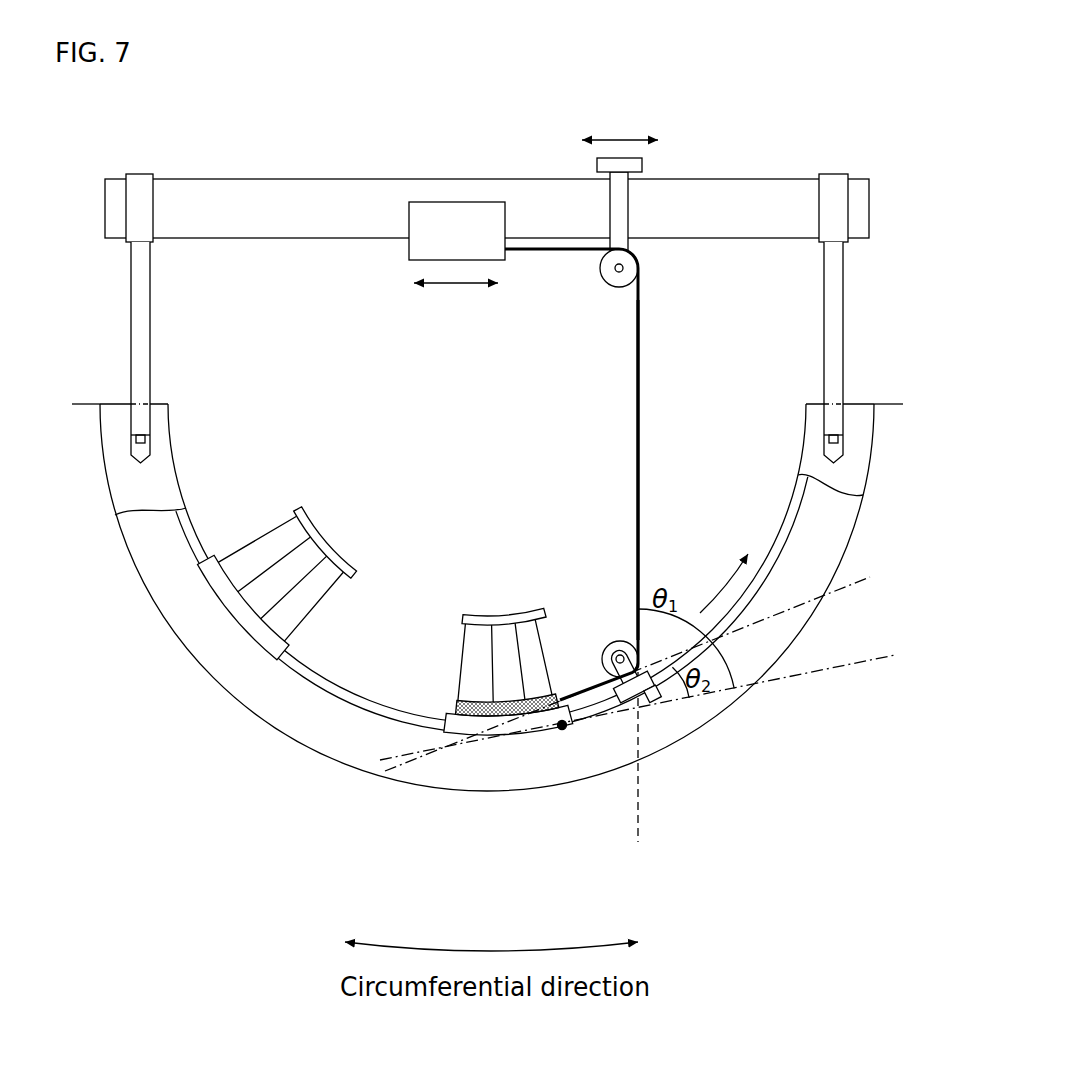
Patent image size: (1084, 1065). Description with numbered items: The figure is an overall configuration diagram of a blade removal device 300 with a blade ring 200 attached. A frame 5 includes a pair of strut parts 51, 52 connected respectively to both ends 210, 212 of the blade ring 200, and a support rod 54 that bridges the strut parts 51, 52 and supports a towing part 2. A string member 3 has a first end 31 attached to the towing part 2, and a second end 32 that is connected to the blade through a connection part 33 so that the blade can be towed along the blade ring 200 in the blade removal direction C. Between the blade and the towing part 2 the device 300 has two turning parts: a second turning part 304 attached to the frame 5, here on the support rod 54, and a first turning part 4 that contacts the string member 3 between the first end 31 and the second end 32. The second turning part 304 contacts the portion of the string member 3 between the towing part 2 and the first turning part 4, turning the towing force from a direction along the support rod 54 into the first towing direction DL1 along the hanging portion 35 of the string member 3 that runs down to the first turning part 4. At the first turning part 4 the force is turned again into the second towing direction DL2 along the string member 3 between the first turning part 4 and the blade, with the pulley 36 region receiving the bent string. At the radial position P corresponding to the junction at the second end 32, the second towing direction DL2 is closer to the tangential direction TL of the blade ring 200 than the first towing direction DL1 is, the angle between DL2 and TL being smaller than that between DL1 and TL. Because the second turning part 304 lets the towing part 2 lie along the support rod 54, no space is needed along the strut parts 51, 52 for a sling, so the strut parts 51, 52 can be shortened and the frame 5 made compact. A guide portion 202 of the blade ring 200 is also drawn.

The blade removal device 300 is at (759, 149).
The support rod 54 is at (283, 196).
The strut part 51 is at (131, 299).
The strut part 52 is at (843, 299).
The frame 5 is at (374, 181).
The towing part 2 is at (454, 216).
The first end 31 is at (505, 240).
The second turning part 304 is at (604, 278).
The blade ring 200 is at (465, 775).
The end of blade ring 210 is at (166, 400).
The end of blade ring 212 is at (814, 401).
The guide rail 202 is at (340, 697).
The second end 32 is at (562, 701).
The connection part 33 is at (456, 706).
The string member 3 is at (598, 393).
The vertical wire portion 35 is at (641, 452).
The lower pulley 36 is at (596, 688).
The first turning part 4 is at (614, 641).
The tangential direction TL is at (658, 702).
The first towing direction DL1 is at (637, 774).
The second towing direction DL2 is at (652, 665).
The radial position P is at (563, 743).
The blade removal direction C is at (724, 583).